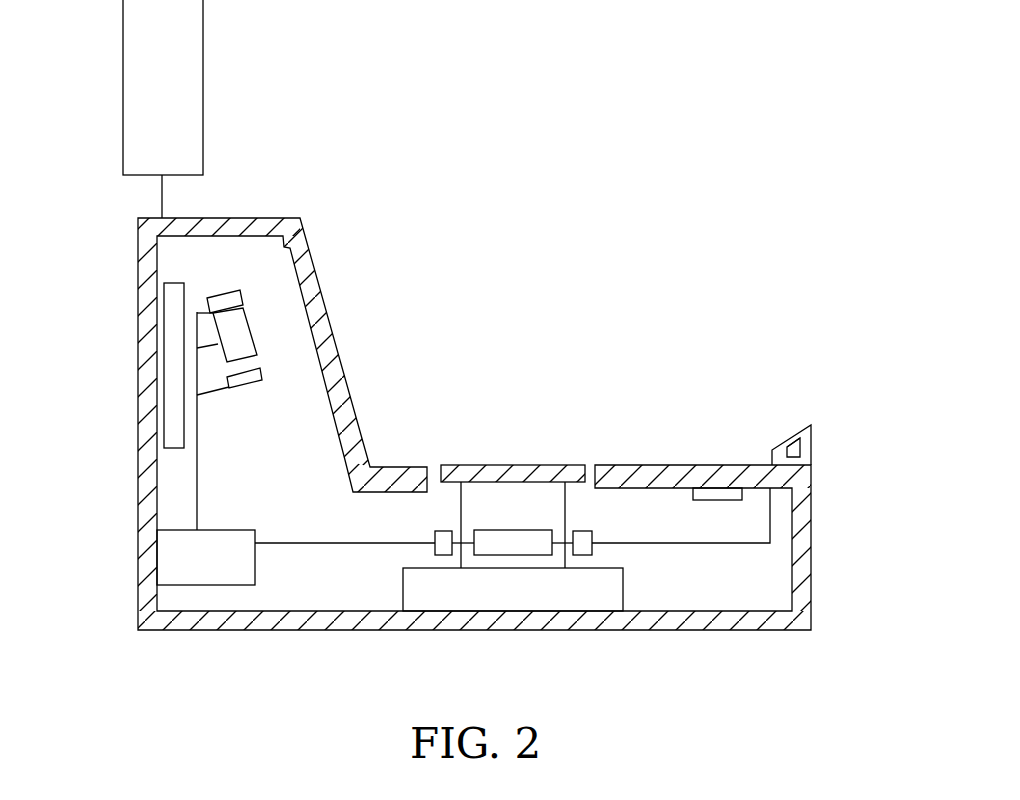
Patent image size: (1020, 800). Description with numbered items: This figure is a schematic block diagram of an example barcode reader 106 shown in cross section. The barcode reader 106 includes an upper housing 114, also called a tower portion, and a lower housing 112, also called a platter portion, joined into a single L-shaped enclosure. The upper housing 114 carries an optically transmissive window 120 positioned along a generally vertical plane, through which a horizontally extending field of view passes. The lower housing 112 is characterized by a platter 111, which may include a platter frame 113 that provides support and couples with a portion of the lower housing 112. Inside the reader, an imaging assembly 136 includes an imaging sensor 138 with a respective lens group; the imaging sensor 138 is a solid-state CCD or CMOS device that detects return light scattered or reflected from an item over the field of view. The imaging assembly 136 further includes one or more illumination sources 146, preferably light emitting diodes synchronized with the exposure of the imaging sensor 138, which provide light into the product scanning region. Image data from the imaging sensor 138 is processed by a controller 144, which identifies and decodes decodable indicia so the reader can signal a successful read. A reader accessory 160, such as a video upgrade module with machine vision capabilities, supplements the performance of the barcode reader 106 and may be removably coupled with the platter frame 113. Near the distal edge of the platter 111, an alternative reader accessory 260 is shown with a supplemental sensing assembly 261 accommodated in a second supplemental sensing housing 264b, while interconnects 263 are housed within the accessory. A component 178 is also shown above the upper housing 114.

The barcode reader 106 is at (108, 184).
The platter 111 is at (665, 483).
The lower housing 112 is at (811, 545).
The platter frame 113 is at (795, 475).
The upper housing 114 is at (242, 218).
The optically transmissive window 120 is at (300, 238).
The imaging assembly 136 is at (240, 356).
The imaging sensor 138 is at (230, 320).
The controller 144 is at (173, 566).
The illumination source 146 is at (232, 290).
The reader accessory 160 is at (712, 500).
The light source 178 is at (123, 70).
The alternative reader accessory 260 is at (803, 448).
The supplemental sensing assembly 261 is at (803, 450).
The interconnects 263 is at (801, 424).
The second supplemental sensing housing 264b is at (812, 425).